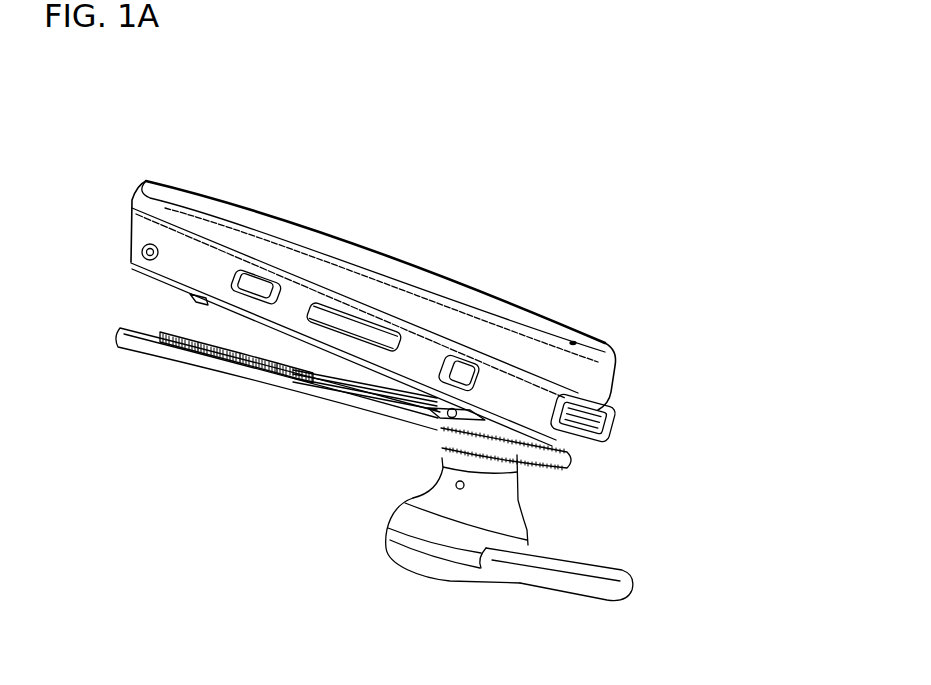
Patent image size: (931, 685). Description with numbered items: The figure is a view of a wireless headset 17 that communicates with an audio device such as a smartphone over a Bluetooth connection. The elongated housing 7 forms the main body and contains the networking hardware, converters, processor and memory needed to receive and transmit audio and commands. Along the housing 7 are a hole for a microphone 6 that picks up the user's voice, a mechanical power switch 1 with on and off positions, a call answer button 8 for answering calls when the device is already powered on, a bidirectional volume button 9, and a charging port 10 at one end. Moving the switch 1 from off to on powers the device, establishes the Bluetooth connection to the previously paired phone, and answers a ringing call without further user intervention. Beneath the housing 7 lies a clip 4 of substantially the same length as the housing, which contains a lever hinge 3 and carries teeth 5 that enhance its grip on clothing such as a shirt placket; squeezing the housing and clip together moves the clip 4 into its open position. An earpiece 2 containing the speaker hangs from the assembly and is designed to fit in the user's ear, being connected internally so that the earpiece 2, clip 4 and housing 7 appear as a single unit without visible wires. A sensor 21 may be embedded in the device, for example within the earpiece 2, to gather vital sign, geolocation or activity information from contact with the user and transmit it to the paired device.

The mechanical power switch 1 is at (463, 358).
The earpiece 2 is at (490, 517).
The lever hinge 3 is at (447, 418).
The clip 4 is at (298, 398).
The teeth 5 is at (218, 347).
The microphone 6 is at (138, 254).
The housing 7 is at (288, 230).
The call answer button 8 is at (251, 280).
The bidirectional volume button 9 is at (355, 318).
The charging port 10 is at (585, 398).
The wireless headset 17 is at (700, 338).
The sensor 21 is at (463, 518).